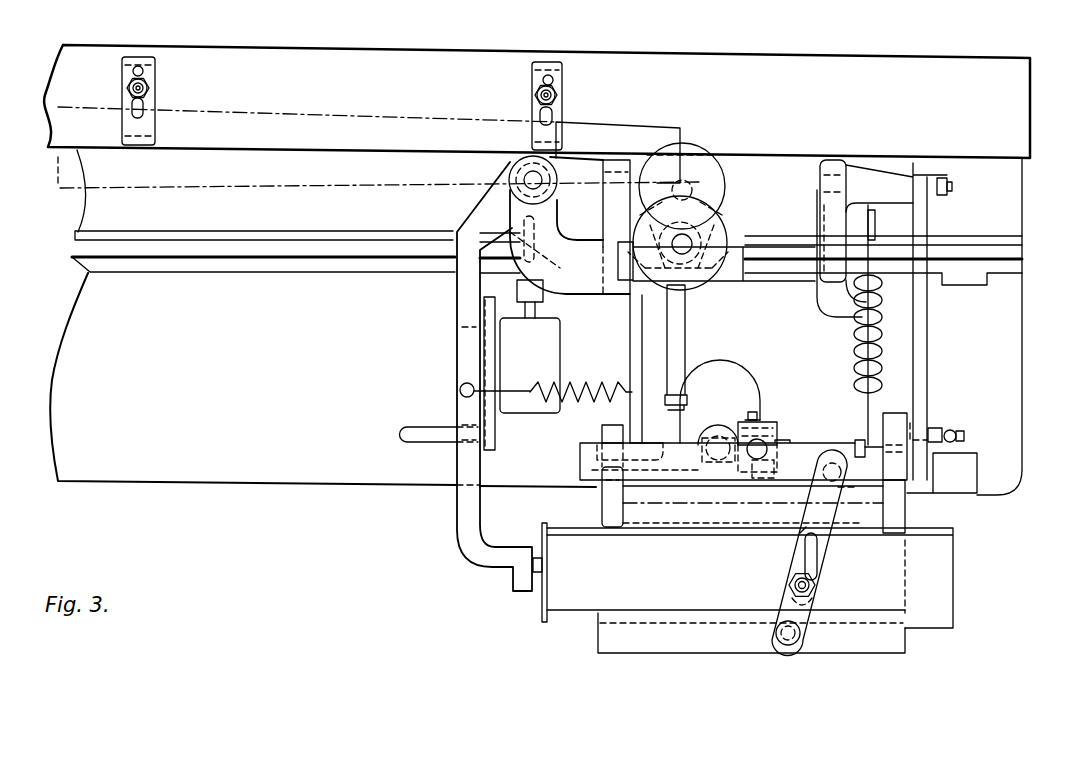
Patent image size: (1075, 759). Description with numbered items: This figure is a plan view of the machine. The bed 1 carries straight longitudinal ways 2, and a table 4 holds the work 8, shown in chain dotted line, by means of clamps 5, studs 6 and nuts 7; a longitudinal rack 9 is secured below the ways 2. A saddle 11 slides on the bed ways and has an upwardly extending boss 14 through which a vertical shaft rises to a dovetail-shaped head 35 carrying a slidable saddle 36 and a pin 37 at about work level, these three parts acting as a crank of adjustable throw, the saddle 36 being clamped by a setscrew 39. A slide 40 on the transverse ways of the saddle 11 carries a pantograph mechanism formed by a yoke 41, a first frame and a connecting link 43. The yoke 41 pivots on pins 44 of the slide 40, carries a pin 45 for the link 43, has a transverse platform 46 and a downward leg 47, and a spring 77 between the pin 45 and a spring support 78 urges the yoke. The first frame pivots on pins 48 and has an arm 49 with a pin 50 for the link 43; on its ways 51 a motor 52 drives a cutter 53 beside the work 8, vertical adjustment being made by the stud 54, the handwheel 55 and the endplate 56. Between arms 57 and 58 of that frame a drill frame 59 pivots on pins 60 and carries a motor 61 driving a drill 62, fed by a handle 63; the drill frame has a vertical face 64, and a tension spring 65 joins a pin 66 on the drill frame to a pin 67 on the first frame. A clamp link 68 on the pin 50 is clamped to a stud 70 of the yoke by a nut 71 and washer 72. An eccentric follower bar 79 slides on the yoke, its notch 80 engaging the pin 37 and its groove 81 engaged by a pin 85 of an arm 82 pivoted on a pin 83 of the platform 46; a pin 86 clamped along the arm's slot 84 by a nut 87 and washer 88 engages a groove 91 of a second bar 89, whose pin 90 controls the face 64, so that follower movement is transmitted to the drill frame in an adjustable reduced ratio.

The bed 1 is at (157, 468).
The ways 2 is at (228, 253).
The table 4 is at (70, 78).
The clamps 5 is at (128, 125).
The studs 6 is at (138, 67).
The nuts 7 is at (146, 85).
The work 8 is at (170, 189).
The rack 9 is at (268, 265).
The saddle 11 is at (857, 217).
The boss 14 is at (718, 428).
The head 35 is at (792, 441).
The saddle 36 is at (762, 432).
The pin 37 is at (752, 459).
The setscrew 39 is at (755, 410).
The slide 40 is at (653, 330).
The yoke 41 is at (902, 505).
The connecting link 43 is at (918, 323).
The pins 44 is at (598, 438).
The pin 45 is at (945, 456).
The platform 46 is at (620, 633).
The leg 47 is at (893, 426).
The pins 48 is at (603, 183).
The arm 49 is at (837, 215).
The pin 50 is at (950, 185).
The ways 51 is at (693, 263).
The motor 52 is at (681, 163).
The cutter 53 is at (690, 183).
The stud 54 is at (690, 240).
The handwheel 55 is at (702, 232).
The endplate 56 is at (737, 263).
The arm 57 is at (594, 273).
The arm 58 is at (573, 173).
The drill frame 59 is at (473, 292).
The pins 60 is at (523, 178).
The motor 61 is at (540, 342).
The drill 62 is at (530, 232).
The handle 63 is at (430, 431).
The face 64 is at (532, 550).
The tension spring 65 is at (590, 388).
The pin 66 is at (459, 390).
The pin 67 is at (678, 338).
The clamp link 68 is at (937, 232).
The stud 70 is at (962, 440).
The nut 71 is at (960, 433).
The washer 72 is at (950, 428).
The spring 77 is at (853, 350).
The spring support 78 is at (884, 215).
The bar 79 is at (980, 460).
The notch 80 is at (764, 459).
The groove 81 is at (820, 460).
The arm 82 is at (802, 537).
The pin 83 is at (780, 642).
The slot 84 is at (815, 567).
The pin 85 is at (850, 500).
The pin 86 is at (792, 586).
The nut 87 is at (808, 592).
The washer 88 is at (790, 594).
The bar 89 is at (940, 572).
The pin 90 is at (530, 572).
The groove 91 is at (817, 552).